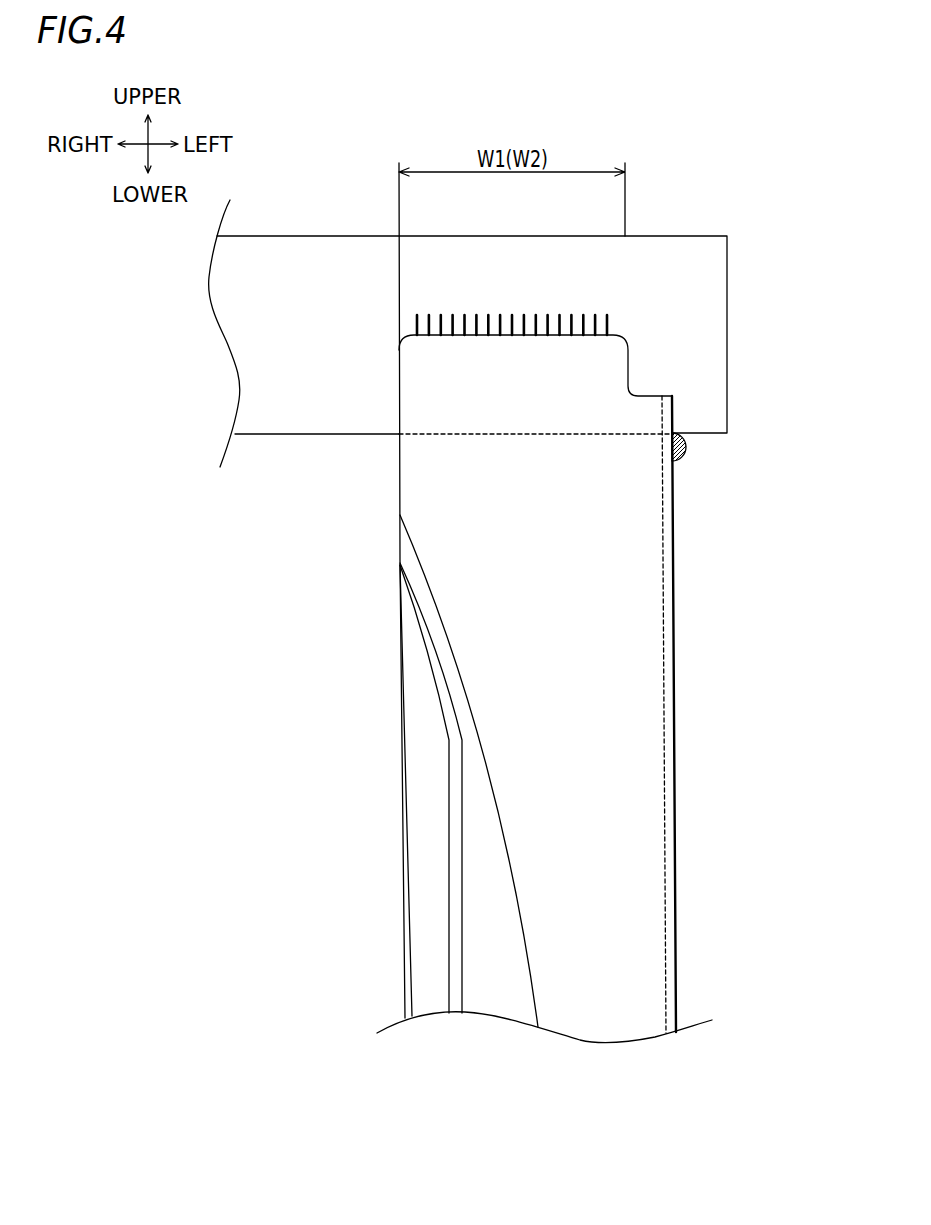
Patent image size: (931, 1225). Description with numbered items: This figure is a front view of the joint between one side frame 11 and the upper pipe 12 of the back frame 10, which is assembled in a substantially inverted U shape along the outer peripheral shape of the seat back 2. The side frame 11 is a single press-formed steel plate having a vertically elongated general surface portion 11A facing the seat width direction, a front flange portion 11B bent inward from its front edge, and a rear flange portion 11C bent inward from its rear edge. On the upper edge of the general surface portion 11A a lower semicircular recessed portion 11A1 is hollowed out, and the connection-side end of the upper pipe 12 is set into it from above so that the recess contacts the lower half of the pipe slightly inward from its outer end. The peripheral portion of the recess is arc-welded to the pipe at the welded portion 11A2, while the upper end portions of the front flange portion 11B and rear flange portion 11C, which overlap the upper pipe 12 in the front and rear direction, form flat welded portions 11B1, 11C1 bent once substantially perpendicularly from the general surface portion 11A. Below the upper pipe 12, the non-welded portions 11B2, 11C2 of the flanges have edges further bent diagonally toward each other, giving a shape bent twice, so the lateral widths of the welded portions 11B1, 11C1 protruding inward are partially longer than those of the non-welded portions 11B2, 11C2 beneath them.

The back frame 10 is at (689, 152).
The seat back 2 is at (510, 565).
The upper pipe 12 is at (661, 261).
The side frame 11 is at (686, 604).
The general surface portion 11A is at (677, 778).
The recessed portion 11A1 is at (672, 429).
The welded portion 11A2 is at (700, 455).
The front flange portion 11B is at (637, 886).
The welded portion 11B1 is at (552, 380).
The non-welded portion 11B2 is at (613, 686).
The rear flange portion 11C is at (422, 904).
The welded portion 11C1 is at (471, 382).
The non-welded portion 11C2 is at (430, 752).